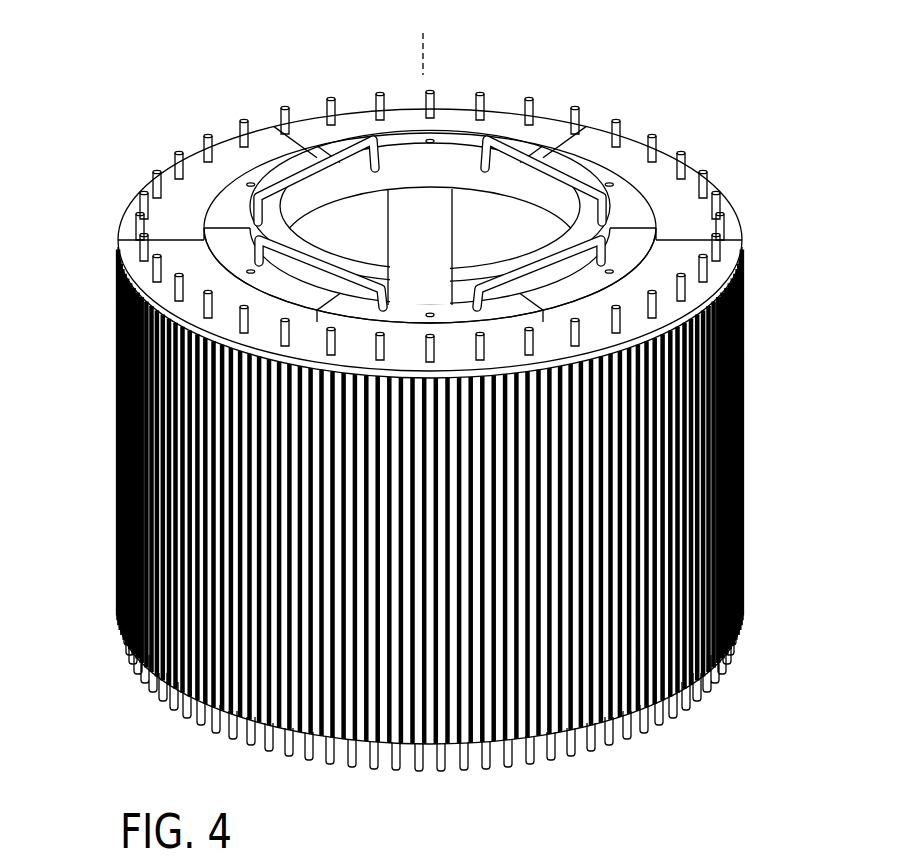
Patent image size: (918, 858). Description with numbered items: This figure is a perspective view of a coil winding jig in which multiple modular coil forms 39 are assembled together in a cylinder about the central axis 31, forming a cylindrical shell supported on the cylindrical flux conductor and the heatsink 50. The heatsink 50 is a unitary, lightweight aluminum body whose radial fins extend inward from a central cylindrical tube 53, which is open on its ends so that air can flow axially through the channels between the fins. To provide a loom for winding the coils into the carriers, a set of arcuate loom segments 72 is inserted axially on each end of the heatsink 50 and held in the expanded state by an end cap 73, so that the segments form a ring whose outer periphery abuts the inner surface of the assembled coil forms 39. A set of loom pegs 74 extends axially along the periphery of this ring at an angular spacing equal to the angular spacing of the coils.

The central axis 31 is at (423, 52).
The coil forms 39 is at (185, 480).
The heatsink 50 is at (514, 220).
The central cylindrical tube 53 is at (343, 226).
The arcuate loom segments 72 is at (620, 157).
The end cap 73 is at (668, 158).
The loom pegs 74 is at (724, 266).